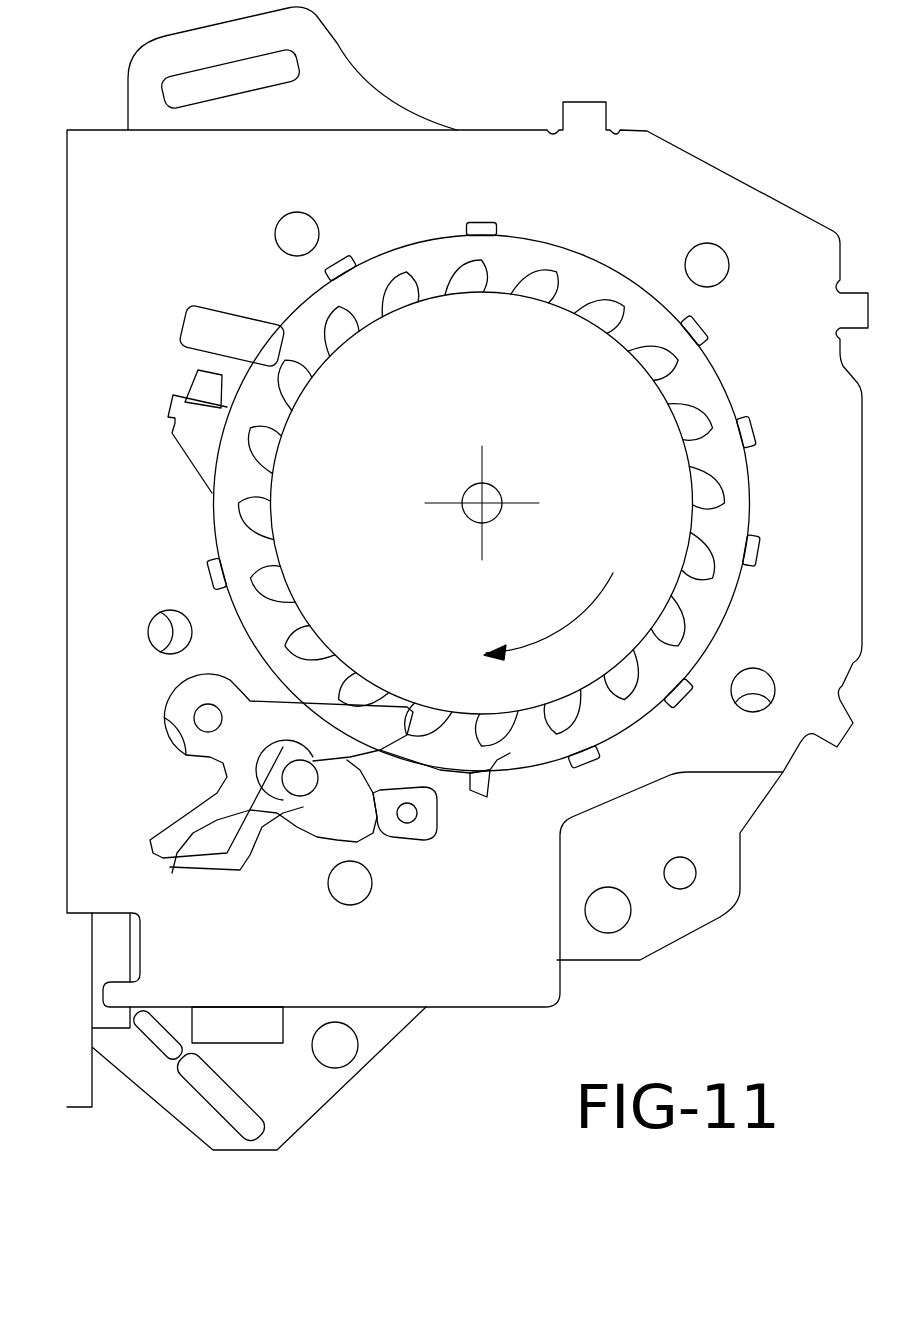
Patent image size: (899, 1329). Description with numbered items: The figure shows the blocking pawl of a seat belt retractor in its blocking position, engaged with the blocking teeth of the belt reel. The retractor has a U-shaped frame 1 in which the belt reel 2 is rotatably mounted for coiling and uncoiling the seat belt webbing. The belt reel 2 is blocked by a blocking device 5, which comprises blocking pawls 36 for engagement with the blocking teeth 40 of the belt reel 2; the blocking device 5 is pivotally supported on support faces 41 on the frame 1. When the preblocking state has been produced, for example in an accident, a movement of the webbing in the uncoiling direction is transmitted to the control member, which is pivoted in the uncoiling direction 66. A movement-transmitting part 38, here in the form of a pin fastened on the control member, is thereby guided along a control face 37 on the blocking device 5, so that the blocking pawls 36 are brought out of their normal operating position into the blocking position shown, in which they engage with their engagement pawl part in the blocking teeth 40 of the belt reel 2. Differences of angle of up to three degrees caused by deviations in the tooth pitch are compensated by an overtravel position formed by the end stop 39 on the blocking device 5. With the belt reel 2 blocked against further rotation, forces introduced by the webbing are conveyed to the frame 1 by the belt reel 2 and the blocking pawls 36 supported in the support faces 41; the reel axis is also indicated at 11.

The frame 1 is at (705, 183).
The belt reel 2 is at (670, 507).
The gear shaft 11 is at (466, 498).
The uncoiling direction 66 is at (556, 632).
The blocking device 5 is at (173, 757).
The support faces 41 is at (166, 712).
The movement-transmitting part 38 is at (298, 792).
The end stop 39 is at (172, 873).
The control face 37 is at (360, 753).
The blocking pawls 36 is at (403, 712).
The blocking teeth 40 is at (423, 723).